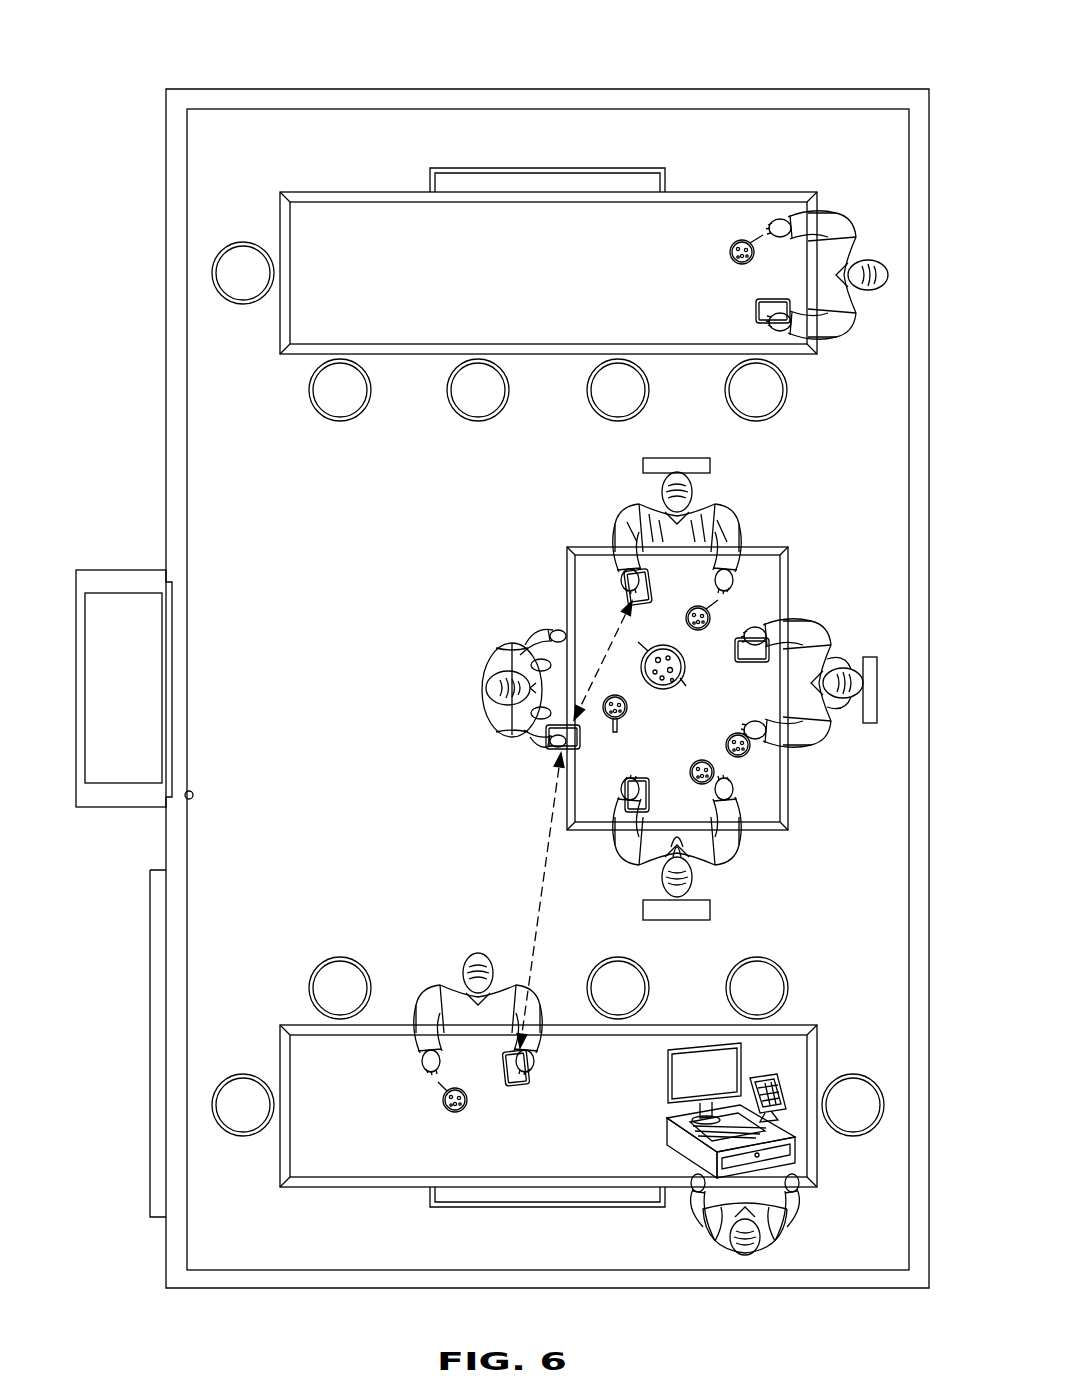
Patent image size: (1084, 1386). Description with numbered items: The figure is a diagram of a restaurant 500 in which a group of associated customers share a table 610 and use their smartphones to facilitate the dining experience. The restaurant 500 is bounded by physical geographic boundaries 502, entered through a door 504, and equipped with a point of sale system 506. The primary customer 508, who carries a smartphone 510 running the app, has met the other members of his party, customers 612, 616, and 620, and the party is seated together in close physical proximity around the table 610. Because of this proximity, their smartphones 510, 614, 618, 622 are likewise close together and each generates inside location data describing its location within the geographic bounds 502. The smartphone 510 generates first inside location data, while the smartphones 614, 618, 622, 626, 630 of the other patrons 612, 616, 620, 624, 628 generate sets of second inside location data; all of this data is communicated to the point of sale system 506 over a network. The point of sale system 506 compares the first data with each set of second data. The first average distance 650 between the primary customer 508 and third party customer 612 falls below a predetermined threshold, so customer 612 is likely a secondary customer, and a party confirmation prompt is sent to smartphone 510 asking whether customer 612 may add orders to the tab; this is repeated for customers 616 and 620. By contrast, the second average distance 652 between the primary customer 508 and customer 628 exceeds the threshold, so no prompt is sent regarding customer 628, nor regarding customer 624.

The restaurant 500 is at (206, 66).
The physical geographic boundaries 502 is at (780, 88).
The door 504 is at (188, 687).
The point of sale system 506 is at (668, 1077).
The primary customer 508 is at (482, 690).
The smartphone 510 is at (545, 742).
The table 610 is at (800, 497).
The third party customer 612 is at (613, 505).
The smartphone 614 is at (625, 588).
The customer 616 is at (832, 627).
The smartphone 618 is at (741, 664).
The customer 620 is at (740, 870).
The smartphone 622 is at (640, 778).
The customer 624 is at (850, 332).
The smartphone 626 is at (757, 313).
The third party customer 628 is at (475, 950).
The smartphone 630 is at (516, 1085).
The first average distance 650 is at (598, 658).
The second average distance 652 is at (547, 866).